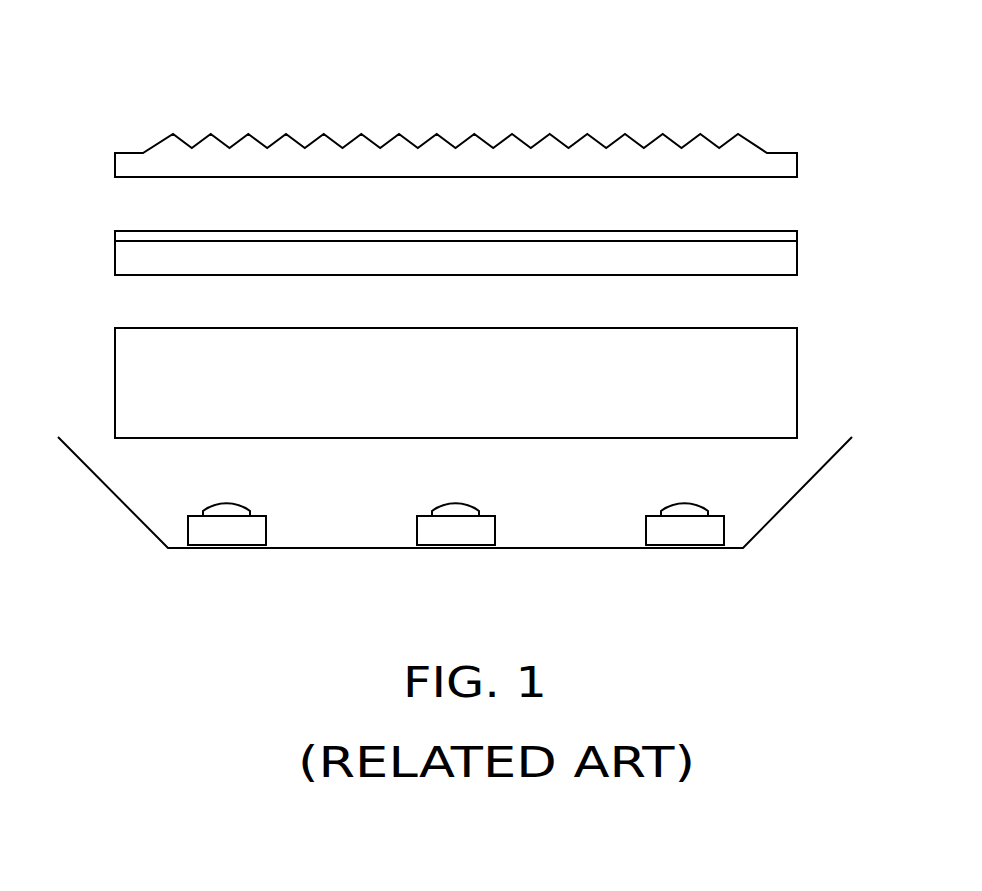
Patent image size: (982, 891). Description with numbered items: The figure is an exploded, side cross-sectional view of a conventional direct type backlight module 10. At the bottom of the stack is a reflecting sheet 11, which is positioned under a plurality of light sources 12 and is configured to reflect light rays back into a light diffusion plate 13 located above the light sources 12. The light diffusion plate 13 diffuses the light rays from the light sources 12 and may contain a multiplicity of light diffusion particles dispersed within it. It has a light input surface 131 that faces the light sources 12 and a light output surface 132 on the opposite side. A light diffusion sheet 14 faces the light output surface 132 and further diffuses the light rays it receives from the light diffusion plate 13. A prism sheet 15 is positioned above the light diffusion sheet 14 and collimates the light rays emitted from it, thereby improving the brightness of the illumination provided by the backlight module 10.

The direct type backlight module 10 is at (475, 32).
The reflecting sheet 11 is at (533, 548).
The light sources 12 is at (687, 520).
The light diffusion plate 13 is at (760, 374).
The light input surface 131 is at (175, 440).
The light output surface 132 is at (147, 326).
The light diffusion sheet 14 is at (775, 257).
The prism sheet 15 is at (742, 155).